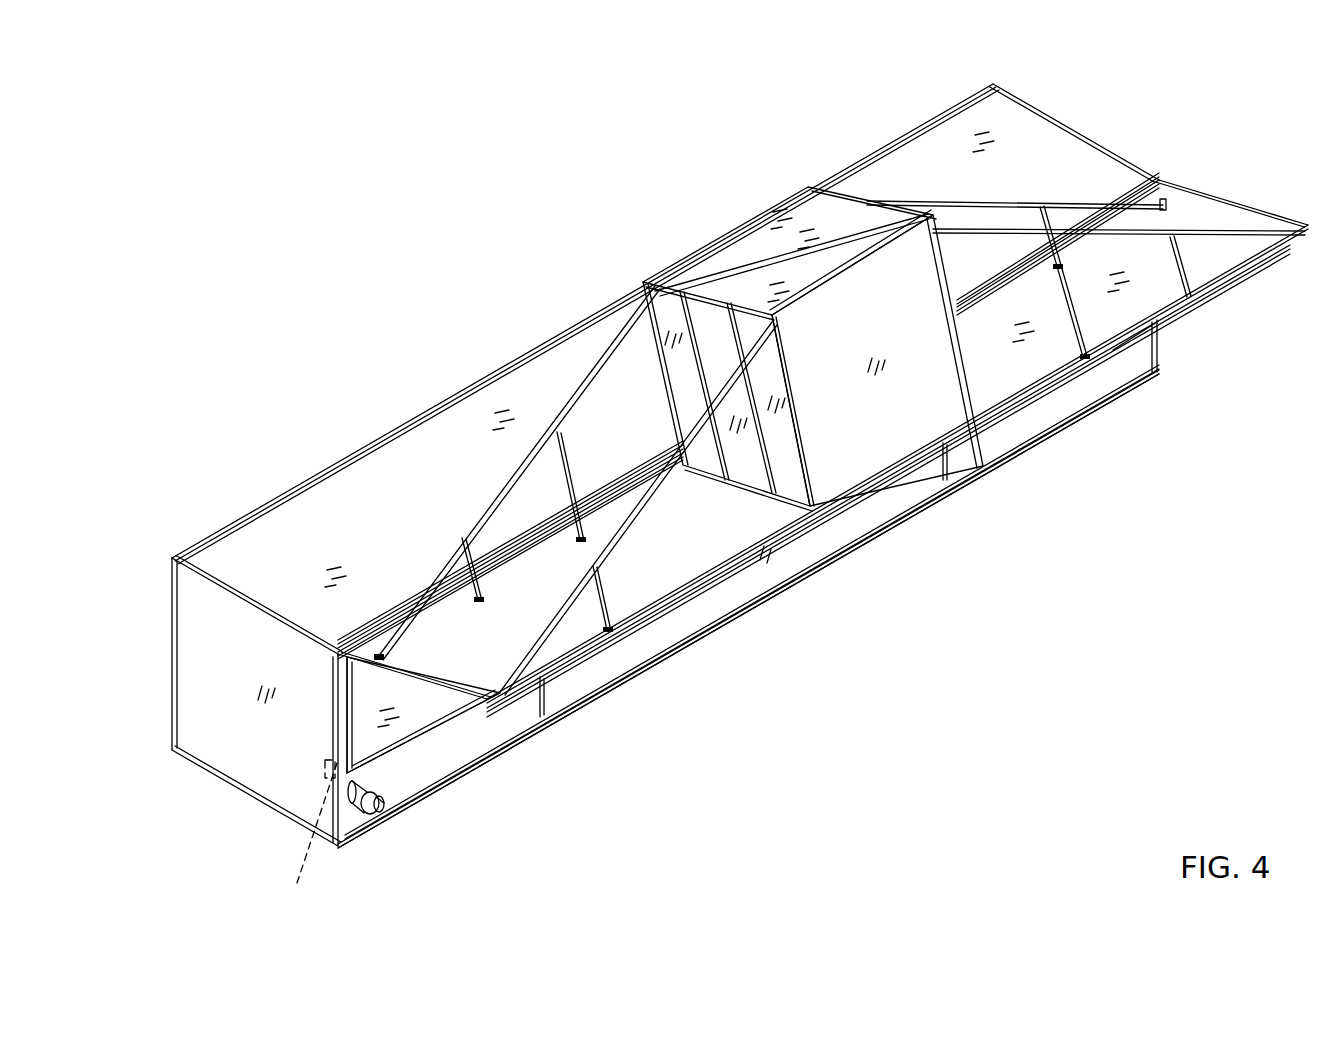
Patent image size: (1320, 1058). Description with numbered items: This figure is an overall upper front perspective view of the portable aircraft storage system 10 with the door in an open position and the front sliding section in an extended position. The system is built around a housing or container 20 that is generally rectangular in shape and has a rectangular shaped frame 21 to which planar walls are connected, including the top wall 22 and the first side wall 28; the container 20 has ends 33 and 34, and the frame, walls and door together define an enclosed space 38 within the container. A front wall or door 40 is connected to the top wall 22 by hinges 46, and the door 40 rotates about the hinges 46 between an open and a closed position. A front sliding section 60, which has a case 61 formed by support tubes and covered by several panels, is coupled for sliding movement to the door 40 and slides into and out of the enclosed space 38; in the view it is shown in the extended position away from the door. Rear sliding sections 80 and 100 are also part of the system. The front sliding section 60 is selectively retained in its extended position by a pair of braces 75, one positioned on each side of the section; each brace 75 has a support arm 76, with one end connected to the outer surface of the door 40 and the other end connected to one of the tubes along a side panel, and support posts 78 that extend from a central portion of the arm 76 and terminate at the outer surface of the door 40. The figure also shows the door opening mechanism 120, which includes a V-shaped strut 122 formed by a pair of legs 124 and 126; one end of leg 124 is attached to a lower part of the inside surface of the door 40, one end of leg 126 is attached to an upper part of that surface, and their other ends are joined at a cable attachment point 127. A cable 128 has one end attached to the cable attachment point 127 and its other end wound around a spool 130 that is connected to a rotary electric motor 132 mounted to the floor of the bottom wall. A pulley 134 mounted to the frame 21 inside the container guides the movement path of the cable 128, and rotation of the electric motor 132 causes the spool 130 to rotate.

The portable aircraft storage system 10 is at (313, 258).
The container 20 is at (340, 458).
The frame 21 is at (172, 638).
The top wall 22 is at (898, 175).
The first side wall 28 is at (205, 708).
The end 33 is at (195, 772).
The end 34 is at (1082, 135).
The enclosed space 38 is at (1080, 383).
The door 40 is at (1210, 297).
The hinges 46 is at (1117, 207).
The front sliding section 60 is at (718, 233).
The case 61 is at (655, 292).
The braces 75 is at (1012, 203).
The support arm 76 is at (592, 356).
The support posts 78 is at (578, 405).
The rear sliding section 80 is at (735, 614).
The rear sliding section 100 is at (900, 512).
The door opening mechanism 120 is at (578, 852).
The V-shaped strut 122 is at (458, 712).
The leg 124 is at (500, 718).
The leg 126 is at (350, 703).
The cable attachment point 127 is at (307, 783).
The cable 128 is at (367, 815).
The spool 130 is at (375, 798).
The rotary electric motor 132 is at (365, 773).
The pulley 134 is at (337, 763).